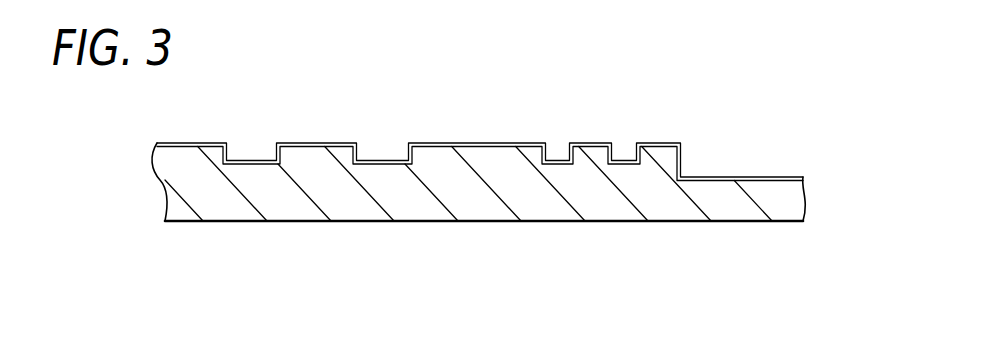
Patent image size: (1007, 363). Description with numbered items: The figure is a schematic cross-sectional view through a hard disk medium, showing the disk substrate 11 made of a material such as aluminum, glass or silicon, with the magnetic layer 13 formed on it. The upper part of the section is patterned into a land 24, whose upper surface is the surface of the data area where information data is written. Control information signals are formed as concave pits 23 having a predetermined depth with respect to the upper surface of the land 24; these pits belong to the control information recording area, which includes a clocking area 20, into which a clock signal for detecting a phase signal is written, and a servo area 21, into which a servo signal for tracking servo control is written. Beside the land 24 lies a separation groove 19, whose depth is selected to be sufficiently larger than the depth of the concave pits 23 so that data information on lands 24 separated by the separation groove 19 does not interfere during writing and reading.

The disk substrate 11 is at (785, 208).
The magnetic layer 13 is at (767, 176).
The separation groove 19 is at (717, 160).
The clocking area 20 is at (640, 132).
The servo area 21 is at (408, 133).
The concave pit 23 is at (256, 161).
The land 24 is at (495, 143).